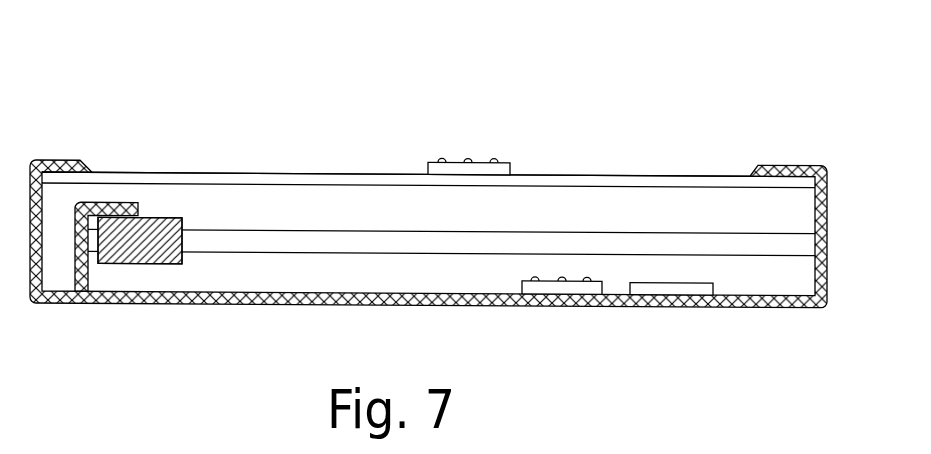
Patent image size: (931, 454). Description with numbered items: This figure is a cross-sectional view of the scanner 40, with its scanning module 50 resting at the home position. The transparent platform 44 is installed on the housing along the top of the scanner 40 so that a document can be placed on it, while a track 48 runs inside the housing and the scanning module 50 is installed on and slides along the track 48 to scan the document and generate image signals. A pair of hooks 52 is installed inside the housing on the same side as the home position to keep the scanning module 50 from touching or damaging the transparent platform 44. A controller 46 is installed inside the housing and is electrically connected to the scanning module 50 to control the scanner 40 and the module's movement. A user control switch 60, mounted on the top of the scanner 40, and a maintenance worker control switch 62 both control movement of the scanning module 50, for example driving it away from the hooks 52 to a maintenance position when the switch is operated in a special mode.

The scanner 40 is at (451, 207).
The transparent platform 44 is at (662, 183).
The controller 46 is at (667, 287).
The track 48 is at (657, 242).
The scanning module 50 is at (176, 258).
The hooks 52 is at (137, 206).
The user control switch 60 is at (500, 162).
The maintenance worker control switch 62 is at (573, 287).